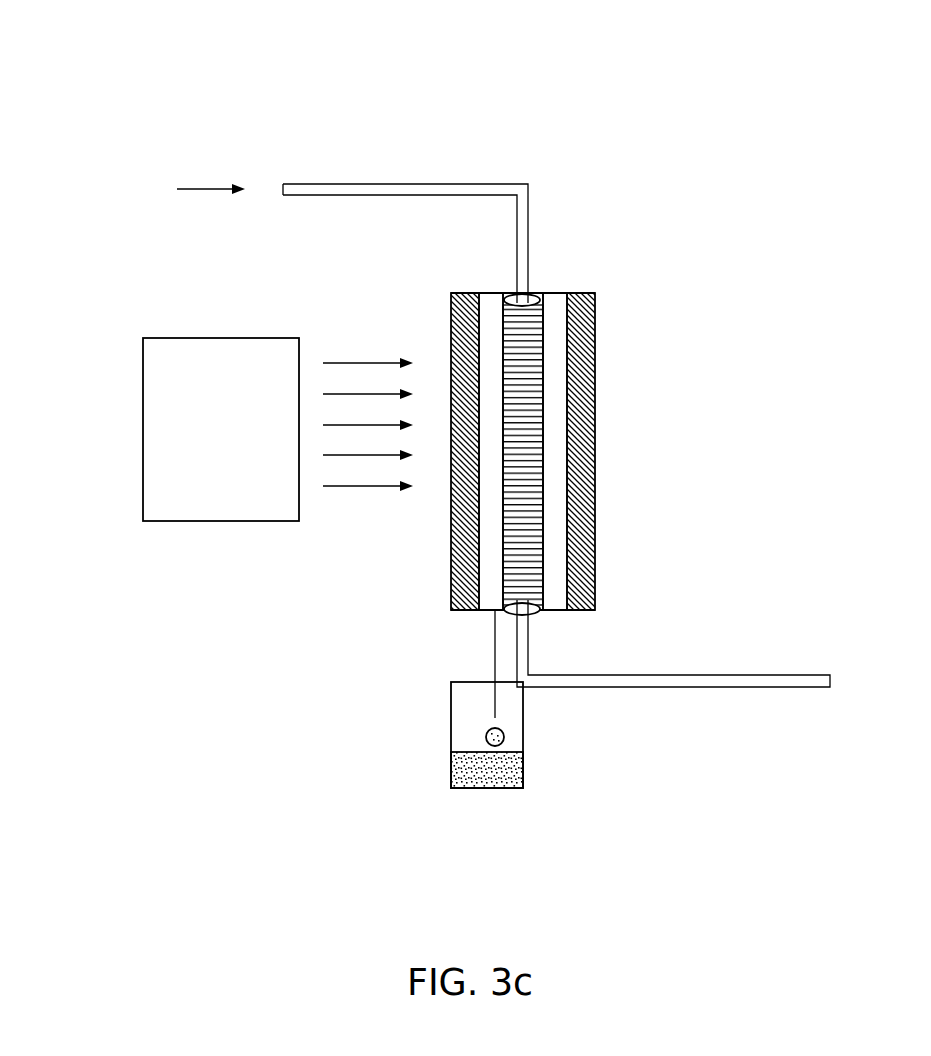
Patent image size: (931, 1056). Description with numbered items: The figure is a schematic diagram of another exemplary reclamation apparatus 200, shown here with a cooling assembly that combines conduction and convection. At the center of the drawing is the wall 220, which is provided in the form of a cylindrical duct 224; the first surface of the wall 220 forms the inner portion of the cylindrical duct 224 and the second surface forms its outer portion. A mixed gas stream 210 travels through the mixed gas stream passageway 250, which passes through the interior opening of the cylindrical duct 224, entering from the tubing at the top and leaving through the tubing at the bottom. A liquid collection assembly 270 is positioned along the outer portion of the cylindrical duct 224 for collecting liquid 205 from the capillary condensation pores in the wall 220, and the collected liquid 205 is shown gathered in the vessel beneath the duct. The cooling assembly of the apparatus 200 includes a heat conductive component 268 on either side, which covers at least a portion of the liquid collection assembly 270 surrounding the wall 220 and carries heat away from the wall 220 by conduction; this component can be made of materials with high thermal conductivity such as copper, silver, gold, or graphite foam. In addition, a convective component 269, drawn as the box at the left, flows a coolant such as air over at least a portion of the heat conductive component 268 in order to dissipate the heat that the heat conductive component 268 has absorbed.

The apparatus 200 is at (590, 66).
The liquid 205 is at (450, 772).
The mixed gas stream 210 is at (198, 187).
The wall 220 is at (527, 425).
The cylindrical duct 224 is at (533, 293).
The mixed gas stream passageway 250 is at (382, 183).
The heat conductive component 268 is at (463, 312).
The convective component 269 is at (142, 423).
The liquid collection assembly 270 is at (490, 535).